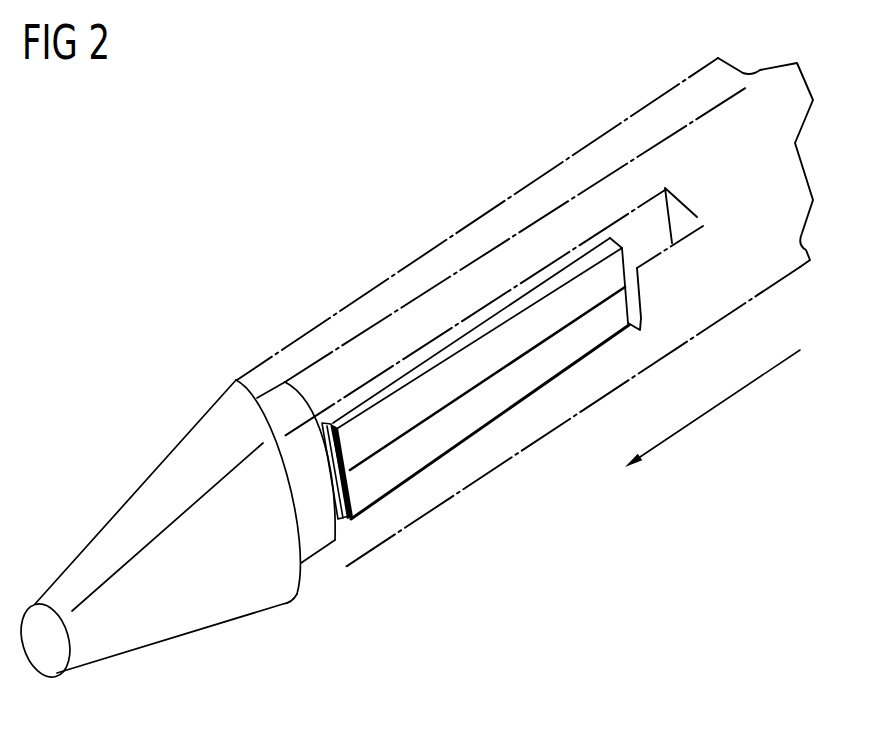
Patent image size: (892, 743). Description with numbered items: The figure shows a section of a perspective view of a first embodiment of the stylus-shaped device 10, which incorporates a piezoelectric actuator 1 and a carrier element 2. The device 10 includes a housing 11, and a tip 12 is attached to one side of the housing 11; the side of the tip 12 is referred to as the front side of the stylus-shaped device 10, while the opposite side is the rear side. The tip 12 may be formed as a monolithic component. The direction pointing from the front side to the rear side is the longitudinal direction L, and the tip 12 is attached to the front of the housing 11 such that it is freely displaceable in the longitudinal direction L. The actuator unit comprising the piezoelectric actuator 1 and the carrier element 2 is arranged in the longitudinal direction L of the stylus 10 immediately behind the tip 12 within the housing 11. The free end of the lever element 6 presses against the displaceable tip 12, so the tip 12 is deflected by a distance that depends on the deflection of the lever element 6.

The piezoelectric actuator 1 is at (568, 275).
The carrier element 2 is at (526, 393).
The lever element 6 is at (344, 519).
The stylus-shaped device 10 is at (285, 272).
The housing 11 is at (797, 247).
The tip 12 is at (152, 639).
The longitudinal direction L is at (713, 410).